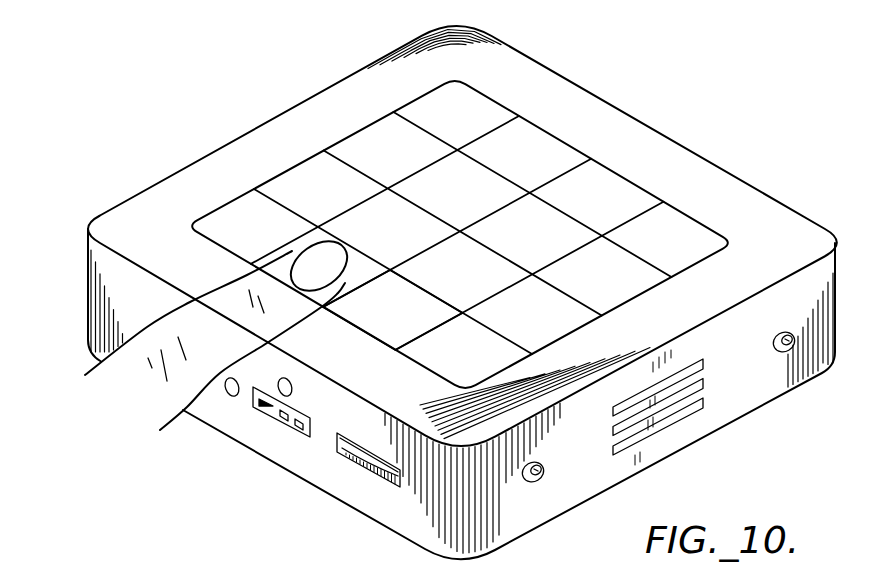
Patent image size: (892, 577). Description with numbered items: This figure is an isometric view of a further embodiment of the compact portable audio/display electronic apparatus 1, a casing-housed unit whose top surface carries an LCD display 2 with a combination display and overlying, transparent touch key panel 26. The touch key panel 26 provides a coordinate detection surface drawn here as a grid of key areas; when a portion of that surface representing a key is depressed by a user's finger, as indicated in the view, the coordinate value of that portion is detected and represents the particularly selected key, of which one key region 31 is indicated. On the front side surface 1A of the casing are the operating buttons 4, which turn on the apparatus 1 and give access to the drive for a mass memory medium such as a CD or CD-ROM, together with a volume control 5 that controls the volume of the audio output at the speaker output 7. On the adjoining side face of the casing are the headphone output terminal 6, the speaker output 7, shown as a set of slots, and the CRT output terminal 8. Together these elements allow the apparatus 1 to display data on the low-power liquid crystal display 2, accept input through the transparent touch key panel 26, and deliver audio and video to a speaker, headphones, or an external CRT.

The compact portable audio/display electronic apparatus 1 is at (222, 95).
The front side surface 1A is at (332, 107).
The display 2 is at (672, 240).
The transparent touch key panel 26 is at (548, 145).
The input cell 31 is at (433, 348).
The operating buttons 4 is at (287, 418).
The volume control 5 is at (377, 473).
The headphone output terminal 6 is at (547, 470).
The speaker output 7 is at (673, 420).
The CRT output terminal 8 is at (779, 356).